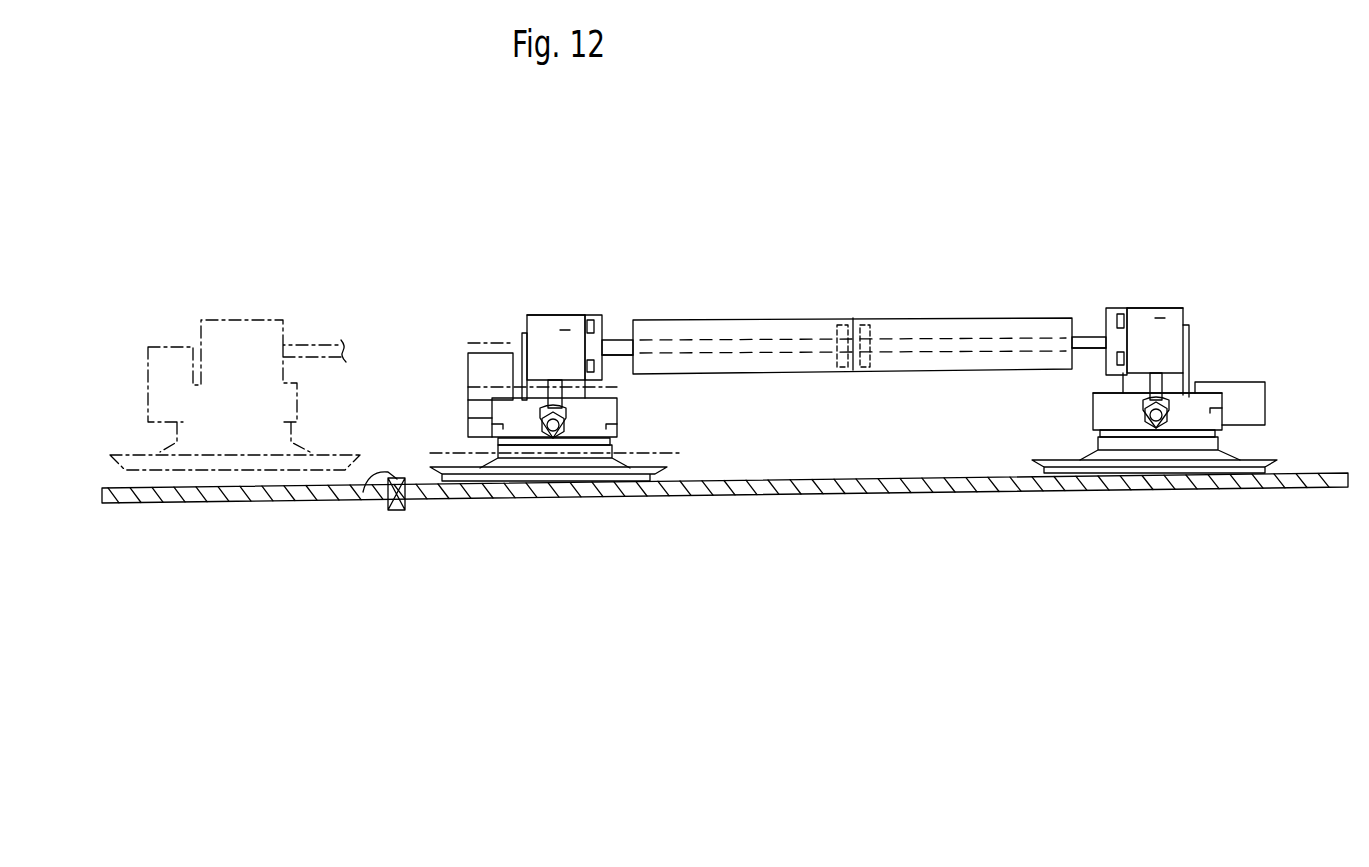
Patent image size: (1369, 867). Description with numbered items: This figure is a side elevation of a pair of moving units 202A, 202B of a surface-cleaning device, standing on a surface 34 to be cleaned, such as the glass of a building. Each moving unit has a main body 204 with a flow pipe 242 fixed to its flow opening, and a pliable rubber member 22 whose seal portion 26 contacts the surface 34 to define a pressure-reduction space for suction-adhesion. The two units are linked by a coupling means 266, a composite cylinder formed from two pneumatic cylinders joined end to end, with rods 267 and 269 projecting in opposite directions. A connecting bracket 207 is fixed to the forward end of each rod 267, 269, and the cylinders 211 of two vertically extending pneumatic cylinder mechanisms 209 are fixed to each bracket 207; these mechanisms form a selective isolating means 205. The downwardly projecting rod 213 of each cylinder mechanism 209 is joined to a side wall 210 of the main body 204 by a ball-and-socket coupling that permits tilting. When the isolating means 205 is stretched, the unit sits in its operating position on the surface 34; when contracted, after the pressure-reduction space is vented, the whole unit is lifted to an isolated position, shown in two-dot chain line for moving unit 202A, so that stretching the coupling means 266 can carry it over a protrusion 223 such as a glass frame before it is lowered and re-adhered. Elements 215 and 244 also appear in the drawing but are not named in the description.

The moving unit 202A is at (188, 328).
The moving unit 202B is at (1214, 312).
The main body 204 is at (470, 417).
The selective isolating means 205 is at (576, 292).
The connecting bracket 207 is at (600, 327).
The pneumatic cylinder mechanism 209 is at (542, 313).
The side wall 210 is at (617, 443).
The cylinder 211 is at (565, 332).
The rod 213 is at (547, 391).
The nut 215 is at (533, 418).
The member 22 is at (694, 470).
The protrusion 223 is at (363, 492).
The flow pipe 242 is at (468, 367).
The stop block 244 is at (1248, 381).
The seal portion 26 is at (428, 456).
The coupling means 266 is at (845, 305).
The rod 267 is at (618, 356).
The rod 269 is at (1095, 349).
The surface 34 is at (818, 482).